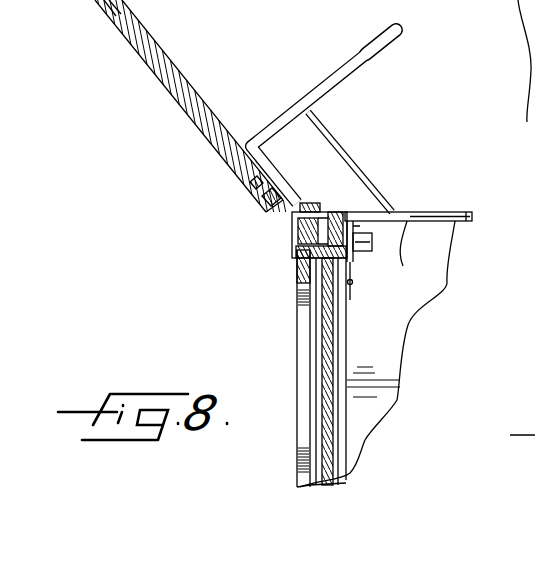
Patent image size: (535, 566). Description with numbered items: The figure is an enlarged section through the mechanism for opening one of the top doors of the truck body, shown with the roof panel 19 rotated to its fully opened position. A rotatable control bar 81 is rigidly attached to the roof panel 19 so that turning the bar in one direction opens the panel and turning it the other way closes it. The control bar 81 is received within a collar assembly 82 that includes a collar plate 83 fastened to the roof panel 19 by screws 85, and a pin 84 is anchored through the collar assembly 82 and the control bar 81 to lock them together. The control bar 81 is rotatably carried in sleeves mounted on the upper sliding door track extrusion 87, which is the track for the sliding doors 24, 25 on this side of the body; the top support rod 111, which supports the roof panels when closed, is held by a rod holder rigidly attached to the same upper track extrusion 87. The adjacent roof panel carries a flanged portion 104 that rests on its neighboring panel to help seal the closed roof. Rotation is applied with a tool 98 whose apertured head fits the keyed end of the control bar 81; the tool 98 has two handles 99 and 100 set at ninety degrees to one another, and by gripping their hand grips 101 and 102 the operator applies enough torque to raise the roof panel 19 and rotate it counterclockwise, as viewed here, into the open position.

The roof panel 19 is at (147, 72).
The sliding door 24 is at (337, 433).
The sliding door 25 is at (310, 373).
The control bar 81 is at (295, 237).
The collar assembly 82 is at (313, 212).
The collar plate 83 is at (268, 152).
The pin 84 is at (303, 212).
The screws 85 is at (268, 210).
The upper sliding door track extrusion 87 is at (297, 275).
The tool 98 is at (290, 84).
The handle 99 is at (350, 73).
The handle 100 is at (328, 128).
The hand grip 101 is at (388, 40).
The hand grip 102 is at (388, 196).
The flanged portion 104 is at (100, 16).
The top support rod 111 is at (377, 354).